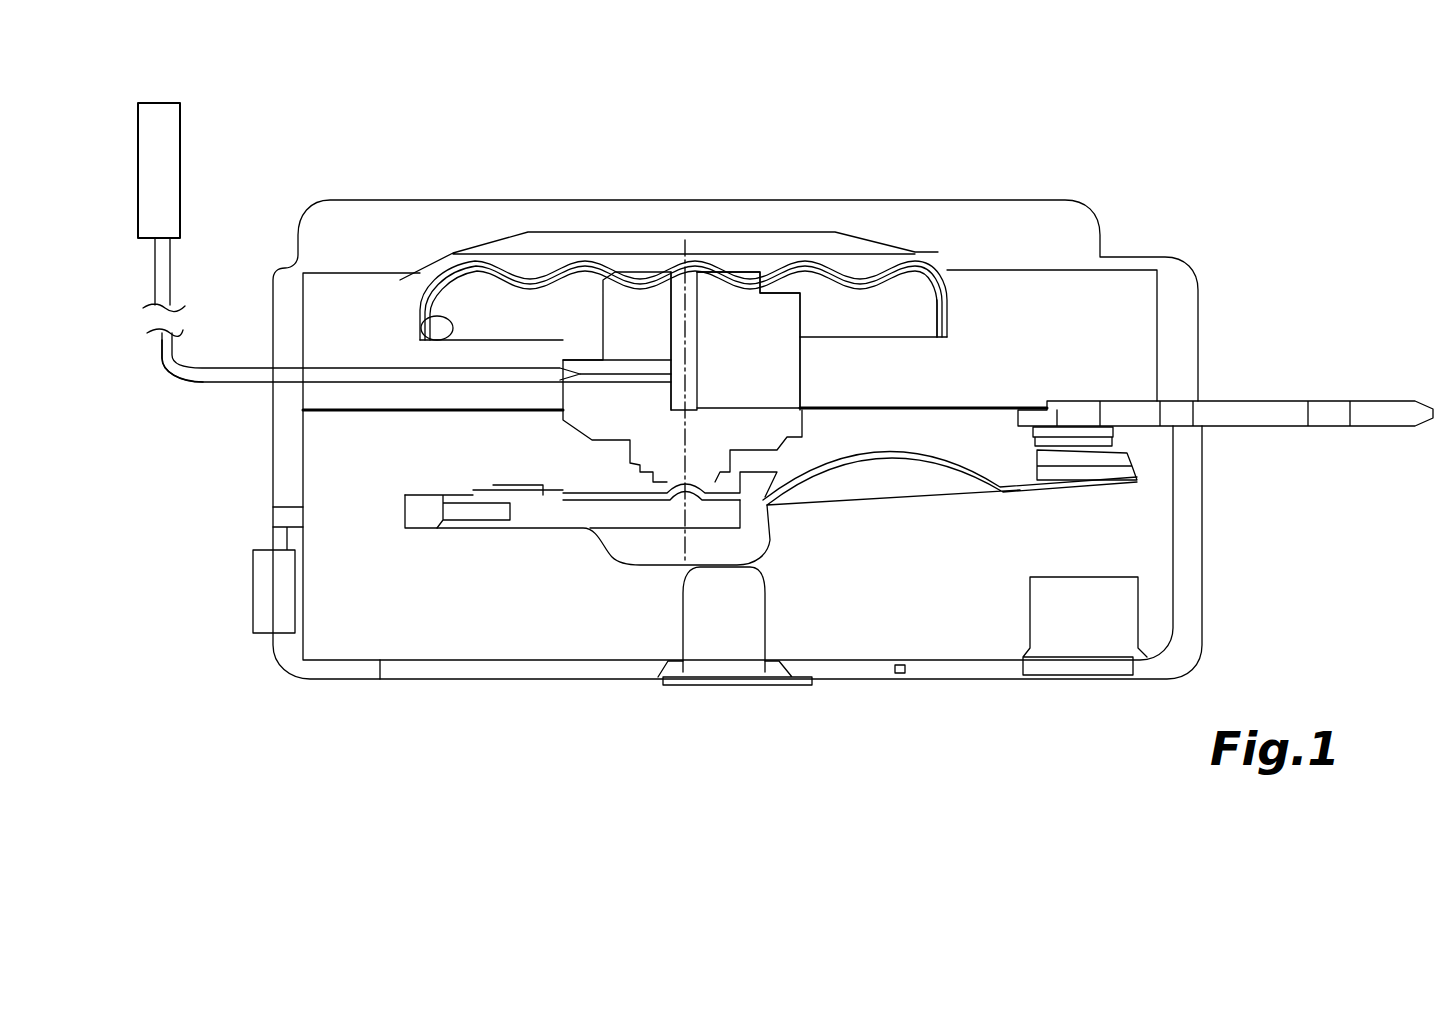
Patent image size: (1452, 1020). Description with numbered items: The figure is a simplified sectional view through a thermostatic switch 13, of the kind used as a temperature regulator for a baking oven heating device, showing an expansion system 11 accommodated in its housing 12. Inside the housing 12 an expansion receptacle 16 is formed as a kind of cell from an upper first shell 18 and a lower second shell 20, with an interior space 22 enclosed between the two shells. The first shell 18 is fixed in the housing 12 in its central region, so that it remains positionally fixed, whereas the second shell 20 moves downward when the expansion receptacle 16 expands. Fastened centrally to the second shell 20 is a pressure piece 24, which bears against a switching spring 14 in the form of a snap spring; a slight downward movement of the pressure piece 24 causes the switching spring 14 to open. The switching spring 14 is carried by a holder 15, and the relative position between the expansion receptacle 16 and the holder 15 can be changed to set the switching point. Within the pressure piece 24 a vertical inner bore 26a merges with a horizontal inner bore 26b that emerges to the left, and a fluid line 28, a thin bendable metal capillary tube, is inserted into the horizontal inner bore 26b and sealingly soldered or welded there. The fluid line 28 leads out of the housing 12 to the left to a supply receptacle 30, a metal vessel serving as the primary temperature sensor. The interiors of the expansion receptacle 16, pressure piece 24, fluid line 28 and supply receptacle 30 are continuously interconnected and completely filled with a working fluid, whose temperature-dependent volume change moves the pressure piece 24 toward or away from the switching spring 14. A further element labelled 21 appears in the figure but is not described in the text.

The expansion system 11 is at (1010, 308).
The housing 12 is at (1200, 275).
The thermostatic switch 13 is at (778, 401).
The switching spring 14 is at (920, 527).
The holder 15 is at (667, 545).
The expansion receptacle 16 is at (408, 295).
The first shell 18 is at (502, 260).
The second shell 20 is at (418, 345).
The seal bead 21 is at (425, 343).
The interior space 22 is at (628, 267).
The pressure piece 24 is at (753, 389).
The vertical inner bore 26a is at (690, 298).
The horizontal inner bore 26b is at (623, 373).
The fluid line 28 is at (237, 383).
The supply receptacle 30 is at (182, 187).